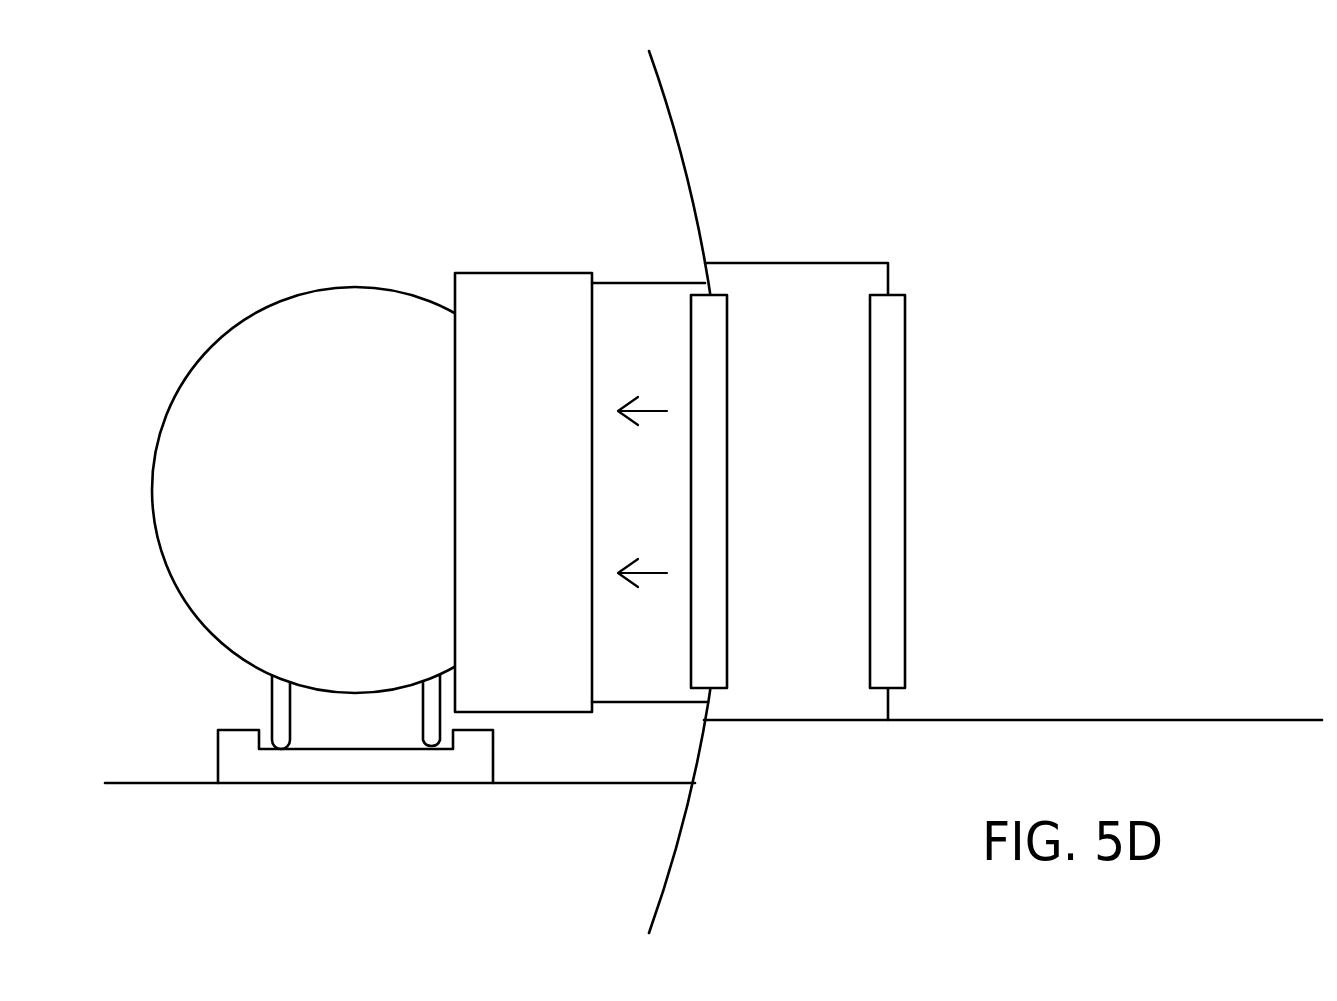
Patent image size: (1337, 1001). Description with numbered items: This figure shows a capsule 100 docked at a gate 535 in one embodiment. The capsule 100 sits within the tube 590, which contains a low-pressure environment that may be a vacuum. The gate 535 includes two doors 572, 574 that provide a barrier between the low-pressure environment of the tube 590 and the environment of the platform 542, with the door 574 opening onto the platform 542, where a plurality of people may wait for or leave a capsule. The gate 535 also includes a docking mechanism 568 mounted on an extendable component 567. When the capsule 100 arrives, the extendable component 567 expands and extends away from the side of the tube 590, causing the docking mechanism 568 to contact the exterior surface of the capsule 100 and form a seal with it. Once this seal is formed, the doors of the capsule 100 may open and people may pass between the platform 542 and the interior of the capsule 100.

The capsule 100 is at (253, 313).
The gate 535 is at (818, 263).
The platform 542 is at (1160, 720).
The extendable component 567 is at (637, 283).
The docking mechanism 568 is at (483, 273).
The door 572 is at (728, 455).
The door 574 is at (906, 430).
The tube 590 is at (663, 87).